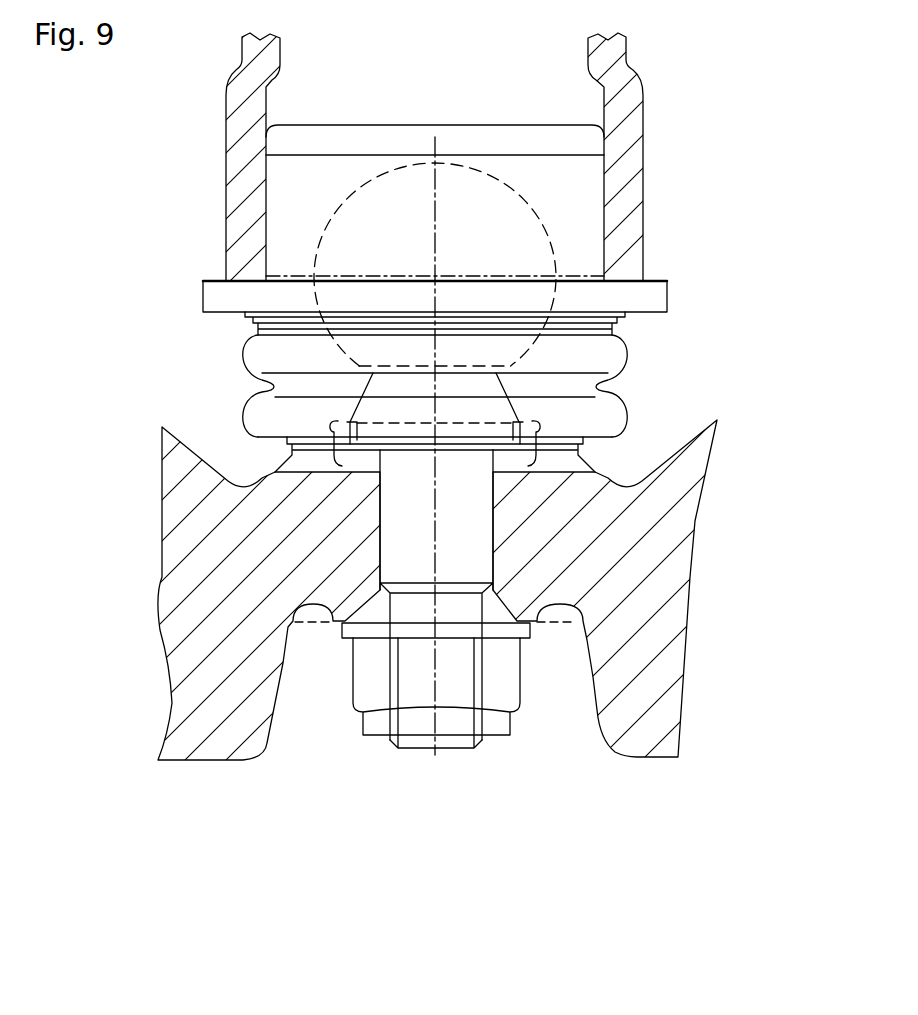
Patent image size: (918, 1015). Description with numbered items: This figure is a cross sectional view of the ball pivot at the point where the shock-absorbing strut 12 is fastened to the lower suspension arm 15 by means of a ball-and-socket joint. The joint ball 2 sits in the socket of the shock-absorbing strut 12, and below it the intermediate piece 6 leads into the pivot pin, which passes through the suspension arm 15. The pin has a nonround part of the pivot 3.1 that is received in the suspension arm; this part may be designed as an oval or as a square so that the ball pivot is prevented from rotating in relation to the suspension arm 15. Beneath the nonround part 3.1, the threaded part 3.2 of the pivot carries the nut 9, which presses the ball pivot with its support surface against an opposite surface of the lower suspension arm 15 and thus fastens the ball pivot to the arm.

The joint ball 2 is at (403, 215).
The shock-absorbing strut 12 is at (628, 187).
The intermediate piece 6 is at (395, 407).
The lower suspension arm 15 is at (212, 602).
The nonround part of the pivot 3.1 is at (458, 542).
The nut 9 is at (375, 688).
The threaded part of the pivot 3.2 is at (465, 752).